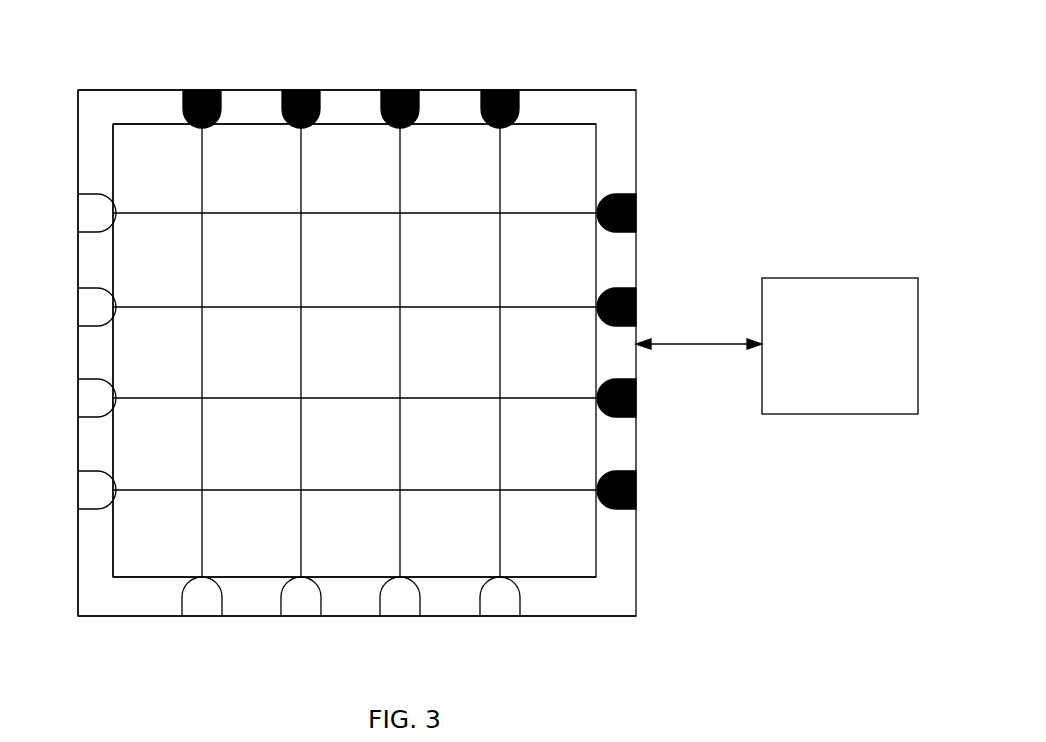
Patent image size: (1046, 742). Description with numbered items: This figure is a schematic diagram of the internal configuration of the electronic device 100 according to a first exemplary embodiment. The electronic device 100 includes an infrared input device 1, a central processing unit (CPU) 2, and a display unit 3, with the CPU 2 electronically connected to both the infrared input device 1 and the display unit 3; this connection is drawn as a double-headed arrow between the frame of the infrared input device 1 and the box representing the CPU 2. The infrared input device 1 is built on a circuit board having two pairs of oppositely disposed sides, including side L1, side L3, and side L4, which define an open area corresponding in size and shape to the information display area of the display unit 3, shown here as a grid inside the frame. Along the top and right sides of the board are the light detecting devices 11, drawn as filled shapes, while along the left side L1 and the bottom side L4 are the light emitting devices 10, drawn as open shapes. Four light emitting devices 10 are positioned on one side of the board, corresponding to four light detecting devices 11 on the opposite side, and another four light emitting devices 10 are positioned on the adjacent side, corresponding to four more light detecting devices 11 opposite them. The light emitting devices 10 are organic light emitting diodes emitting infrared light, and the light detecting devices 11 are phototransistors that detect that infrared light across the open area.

The electronic device 100 is at (695, 108).
The infrared input device 1 is at (590, 90).
The central processing unit (CPU) 2 is at (827, 278).
The display unit 3 is at (596, 430).
The light emitting device 10 is at (78, 220).
The light detecting device 11 is at (500, 90).
The side L1 is at (70, 353).
The side L3 is at (125, 105).
The side L4 is at (622, 553).